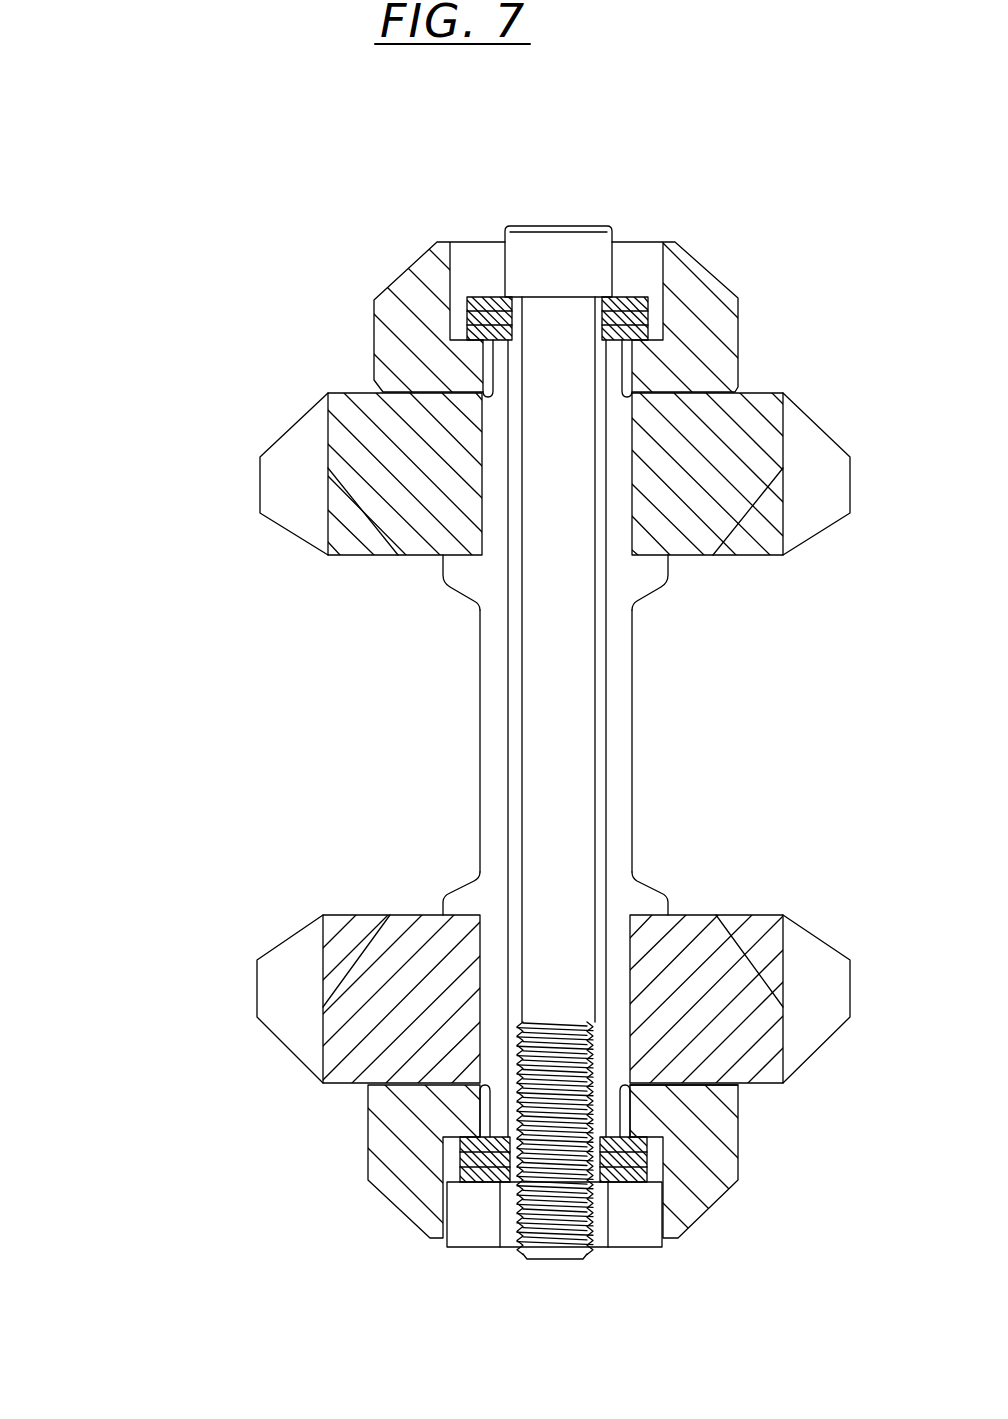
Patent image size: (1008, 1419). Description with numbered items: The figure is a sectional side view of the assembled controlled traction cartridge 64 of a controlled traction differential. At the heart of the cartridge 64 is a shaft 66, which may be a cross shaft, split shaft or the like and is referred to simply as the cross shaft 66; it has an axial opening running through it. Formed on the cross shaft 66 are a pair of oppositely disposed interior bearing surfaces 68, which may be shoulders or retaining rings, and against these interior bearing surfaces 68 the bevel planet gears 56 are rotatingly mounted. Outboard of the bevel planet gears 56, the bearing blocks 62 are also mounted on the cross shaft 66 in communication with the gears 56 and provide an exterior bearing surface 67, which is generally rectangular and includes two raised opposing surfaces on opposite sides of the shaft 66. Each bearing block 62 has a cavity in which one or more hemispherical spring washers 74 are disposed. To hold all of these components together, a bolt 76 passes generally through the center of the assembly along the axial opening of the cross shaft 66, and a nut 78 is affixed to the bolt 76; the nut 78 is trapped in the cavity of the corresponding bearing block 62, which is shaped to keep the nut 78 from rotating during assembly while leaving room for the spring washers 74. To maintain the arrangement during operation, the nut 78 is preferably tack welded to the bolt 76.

The controlled traction cartridge 64 is at (133, 749).
The bearing block 62 is at (417, 282).
The hemispherical spring washers 74 is at (635, 307).
The bevel planet gear 56 is at (353, 503).
The cross shaft 66 is at (478, 740).
The interior bearing surface 68 is at (647, 578).
The exterior bearing surface 67 is at (725, 1097).
The nut 78 is at (612, 1213).
The bolt 76 is at (558, 1238).